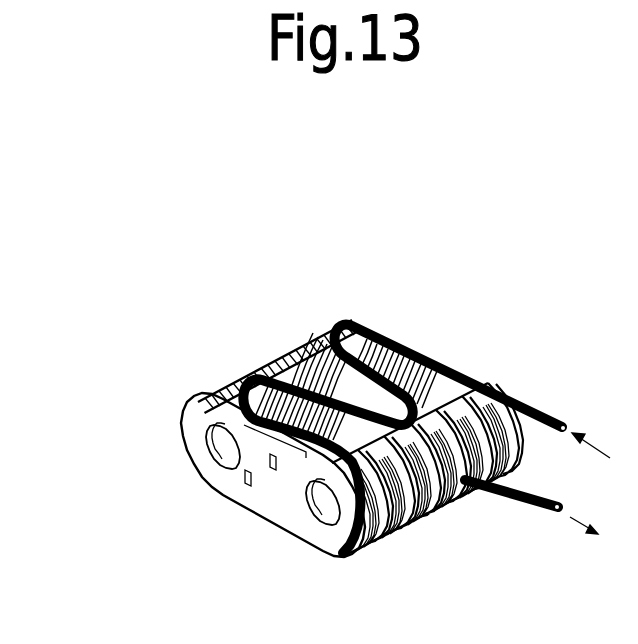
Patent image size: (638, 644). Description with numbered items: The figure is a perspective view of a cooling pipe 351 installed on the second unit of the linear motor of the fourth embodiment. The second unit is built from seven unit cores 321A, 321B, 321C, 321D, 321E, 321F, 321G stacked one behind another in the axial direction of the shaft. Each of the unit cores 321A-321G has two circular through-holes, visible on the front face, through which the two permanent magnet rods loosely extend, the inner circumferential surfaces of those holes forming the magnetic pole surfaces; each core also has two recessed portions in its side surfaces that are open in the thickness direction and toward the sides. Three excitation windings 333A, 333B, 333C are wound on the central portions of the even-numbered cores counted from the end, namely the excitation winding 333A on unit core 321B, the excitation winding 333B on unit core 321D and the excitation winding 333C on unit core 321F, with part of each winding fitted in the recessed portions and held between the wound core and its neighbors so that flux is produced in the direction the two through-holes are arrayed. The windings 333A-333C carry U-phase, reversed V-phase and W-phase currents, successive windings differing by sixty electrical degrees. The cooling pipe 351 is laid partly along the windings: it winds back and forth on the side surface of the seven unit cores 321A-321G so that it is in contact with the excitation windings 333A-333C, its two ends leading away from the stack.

The unit core 321A is at (198, 398).
The unit core 321B is at (225, 388).
The unit core 321C is at (256, 370).
The unit core 321D is at (278, 358).
The unit core 321E is at (300, 345).
The unit core 321F is at (323, 333).
The unit core 321G is at (345, 320).
The cooling pipe 351 is at (402, 338).
The excitation winding 333A is at (383, 523).
The excitation winding 333B is at (480, 477).
The excitation winding 333C is at (507, 453).